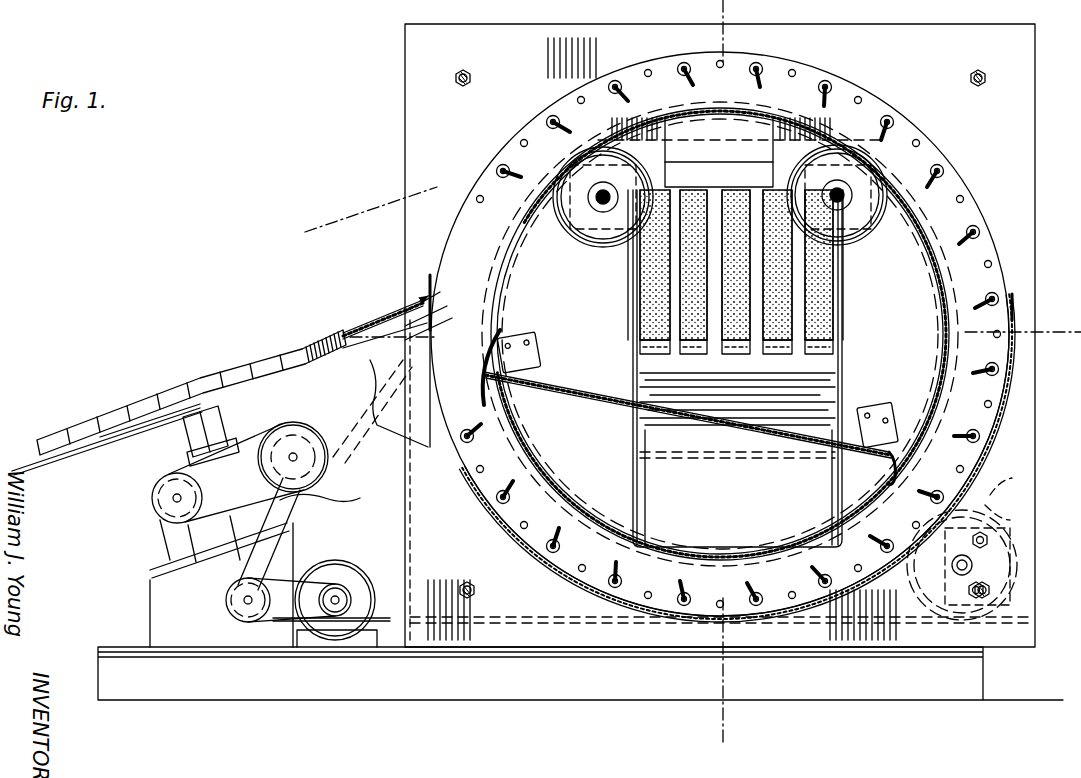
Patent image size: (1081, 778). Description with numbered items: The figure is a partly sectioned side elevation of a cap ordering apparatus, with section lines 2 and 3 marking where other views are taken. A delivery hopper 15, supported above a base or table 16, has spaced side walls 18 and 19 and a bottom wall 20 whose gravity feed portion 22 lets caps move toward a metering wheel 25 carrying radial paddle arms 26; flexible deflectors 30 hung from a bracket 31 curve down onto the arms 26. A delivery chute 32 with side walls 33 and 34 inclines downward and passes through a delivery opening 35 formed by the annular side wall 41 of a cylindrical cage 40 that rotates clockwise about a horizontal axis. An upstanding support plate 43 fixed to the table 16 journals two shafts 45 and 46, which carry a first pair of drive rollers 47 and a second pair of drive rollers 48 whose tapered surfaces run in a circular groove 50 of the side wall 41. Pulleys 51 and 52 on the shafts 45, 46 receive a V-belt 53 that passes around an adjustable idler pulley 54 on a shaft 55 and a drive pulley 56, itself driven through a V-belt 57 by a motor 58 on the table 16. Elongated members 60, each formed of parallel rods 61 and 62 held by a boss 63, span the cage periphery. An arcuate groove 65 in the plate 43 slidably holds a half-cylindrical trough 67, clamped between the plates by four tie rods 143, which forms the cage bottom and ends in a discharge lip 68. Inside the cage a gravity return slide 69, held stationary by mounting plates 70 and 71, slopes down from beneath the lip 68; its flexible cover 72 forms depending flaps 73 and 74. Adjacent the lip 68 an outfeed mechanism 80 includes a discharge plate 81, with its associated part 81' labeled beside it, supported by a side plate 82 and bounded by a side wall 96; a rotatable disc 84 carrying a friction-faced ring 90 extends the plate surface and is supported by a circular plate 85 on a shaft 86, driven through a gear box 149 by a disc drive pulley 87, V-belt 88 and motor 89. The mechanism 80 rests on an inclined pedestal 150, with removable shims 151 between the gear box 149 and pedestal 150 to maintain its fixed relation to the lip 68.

The section line 2- 2 is at (797, 36).
The section line 3 is at (433, 220).
The delivery hopper 15 is at (740, 126).
The base or table 16 is at (505, 650).
The side wall 18 is at (848, 342).
The side wall 19 is at (636, 340).
The bottom wall 20 is at (714, 270).
The gravity feed portion 22 is at (830, 290).
The metering wheel 25 is at (808, 378).
The paddle arms 26 is at (768, 385).
The elongated deflectors 30 is at (760, 318).
The bracket 31 is at (700, 170).
The delivery chute 32 is at (705, 560).
The side wall 33 is at (837, 522).
The side wall 34 is at (637, 505).
The delivery opening 35 is at (925, 236).
The cylindrical cage 40 is at (1000, 168).
The annular side wall 41 is at (660, 64).
The support plate 43 is at (1020, 30).
The shaft 45 is at (603, 190).
The shaft 46 is at (837, 190).
The first pair of drive rollers 47 is at (596, 145).
The second pair of drive rollers 48 is at (838, 160).
The circular groove 50 is at (625, 508).
The pulley 51 is at (565, 246).
The pulley 52 is at (878, 242).
The V-belt 53 is at (280, 548).
The adjustable idler pulley 54 is at (1012, 518).
The shaft 55 is at (975, 565).
The drive pulley 56 is at (224, 595).
The V-belt 57 is at (192, 555).
The motor 58 is at (365, 582).
The elongated members 60 is at (540, 151).
The rod 61 is at (548, 120).
The rod 62 is at (546, 126).
The boss 63 is at (490, 490).
The arcuate grooves 65 is at (1013, 310).
The trough 67 is at (552, 555).
The discharge lip 68 is at (492, 312).
The gravity return slide 69 is at (722, 430).
The mounting plate 70 is at (525, 342).
The mounting plate 71 is at (877, 422).
The cover 72 is at (592, 395).
The depending flap 73 is at (488, 395).
The depending flap 74 is at (890, 476).
The outfeed mechanism 80 is at (110, 488).
The discharge plate 81 is at (376, 358).
The belt run 81' is at (385, 299).
The side plate 82 is at (405, 440).
The rotatable disc 84 is at (72, 452).
The circular plate 85 is at (128, 433).
The rotatable shaft 86 is at (224, 428).
The disc drive pulley 87 is at (160, 508).
The V-belt 88 is at (185, 500).
The motor 89 is at (325, 435).
The ring 90 is at (140, 400).
The side wall 96 is at (365, 325).
The tie rods 143 is at (462, 70).
The gear box 149 is at (162, 530).
The pedestal 150 is at (188, 528).
The removable shims 151 is at (320, 508).